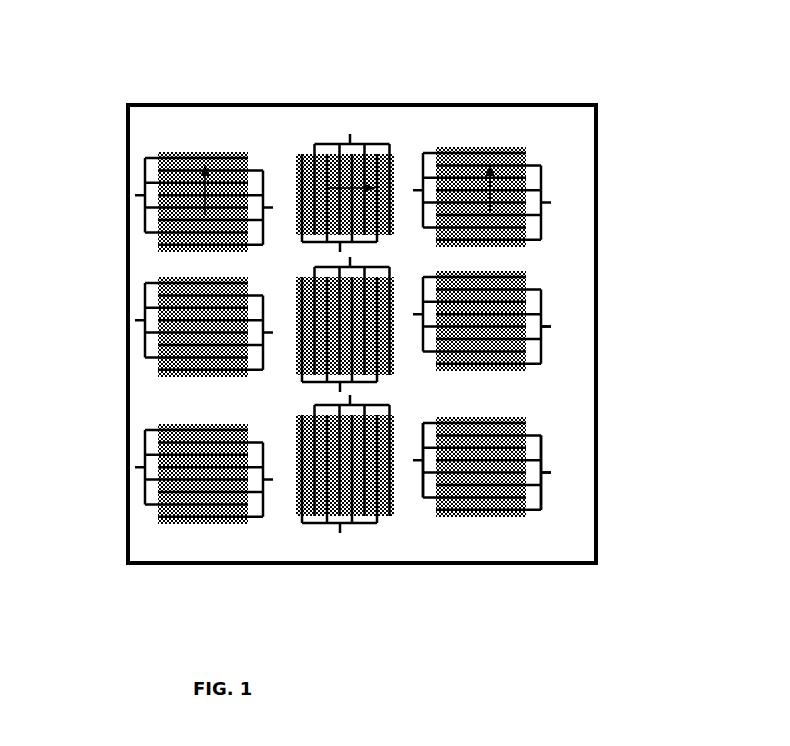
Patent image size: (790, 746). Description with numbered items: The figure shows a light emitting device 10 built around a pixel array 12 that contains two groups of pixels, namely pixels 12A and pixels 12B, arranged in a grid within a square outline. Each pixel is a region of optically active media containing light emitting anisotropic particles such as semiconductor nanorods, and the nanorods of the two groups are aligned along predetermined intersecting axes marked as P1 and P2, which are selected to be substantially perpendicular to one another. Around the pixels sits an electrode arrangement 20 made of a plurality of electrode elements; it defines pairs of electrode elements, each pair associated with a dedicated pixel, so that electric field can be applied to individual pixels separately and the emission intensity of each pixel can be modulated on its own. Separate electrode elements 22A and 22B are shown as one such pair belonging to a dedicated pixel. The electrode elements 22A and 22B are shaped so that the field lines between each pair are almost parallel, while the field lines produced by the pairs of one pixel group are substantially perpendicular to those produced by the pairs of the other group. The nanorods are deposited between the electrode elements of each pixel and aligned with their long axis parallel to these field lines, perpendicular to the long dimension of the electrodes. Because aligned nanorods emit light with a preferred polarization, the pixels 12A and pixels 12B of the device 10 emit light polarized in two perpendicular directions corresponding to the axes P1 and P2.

The light emitting device 10 is at (188, 73).
The pixel array 12 is at (157, 185).
The pixels 12A is at (385, 303).
The pixels 12B is at (500, 303).
The electrode arrangement 20 is at (542, 362).
The electrode element 22A is at (545, 511).
The electrode element 22B is at (425, 498).
The alignment axis P1 is at (488, 200).
The alignment axis P2 is at (327, 187).